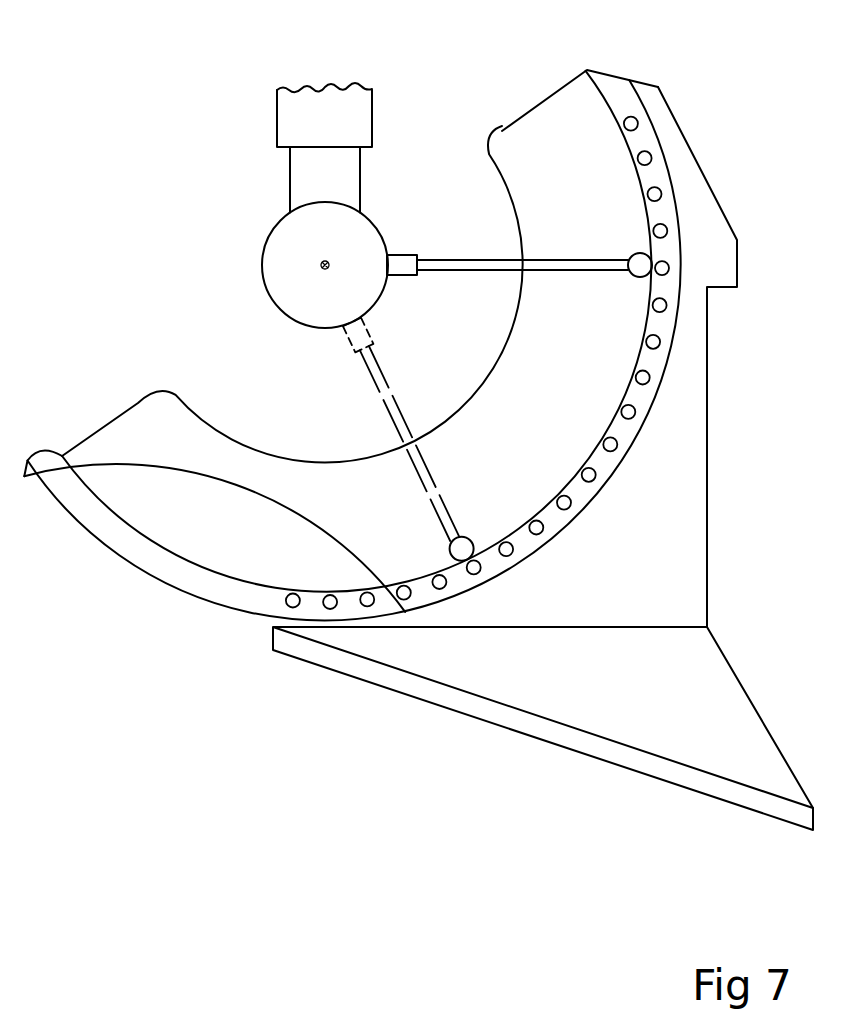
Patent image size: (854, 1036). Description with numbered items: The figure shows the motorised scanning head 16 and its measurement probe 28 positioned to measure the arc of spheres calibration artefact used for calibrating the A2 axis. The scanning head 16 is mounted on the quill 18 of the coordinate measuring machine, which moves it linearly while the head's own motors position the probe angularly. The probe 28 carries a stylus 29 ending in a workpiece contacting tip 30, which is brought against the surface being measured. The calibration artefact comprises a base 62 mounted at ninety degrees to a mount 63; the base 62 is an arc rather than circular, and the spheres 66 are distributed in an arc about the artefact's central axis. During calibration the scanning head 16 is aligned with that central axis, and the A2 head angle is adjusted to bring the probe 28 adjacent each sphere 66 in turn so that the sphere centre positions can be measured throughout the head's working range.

The motorised scanning head 16 is at (282, 243).
The quill 18 is at (288, 107).
The probe 28 is at (402, 270).
The stylus 29 is at (493, 267).
The workpiece contacting tip 30 is at (643, 267).
The base 62 is at (675, 542).
The mount 63 is at (513, 660).
The spheres 66 is at (627, 118).